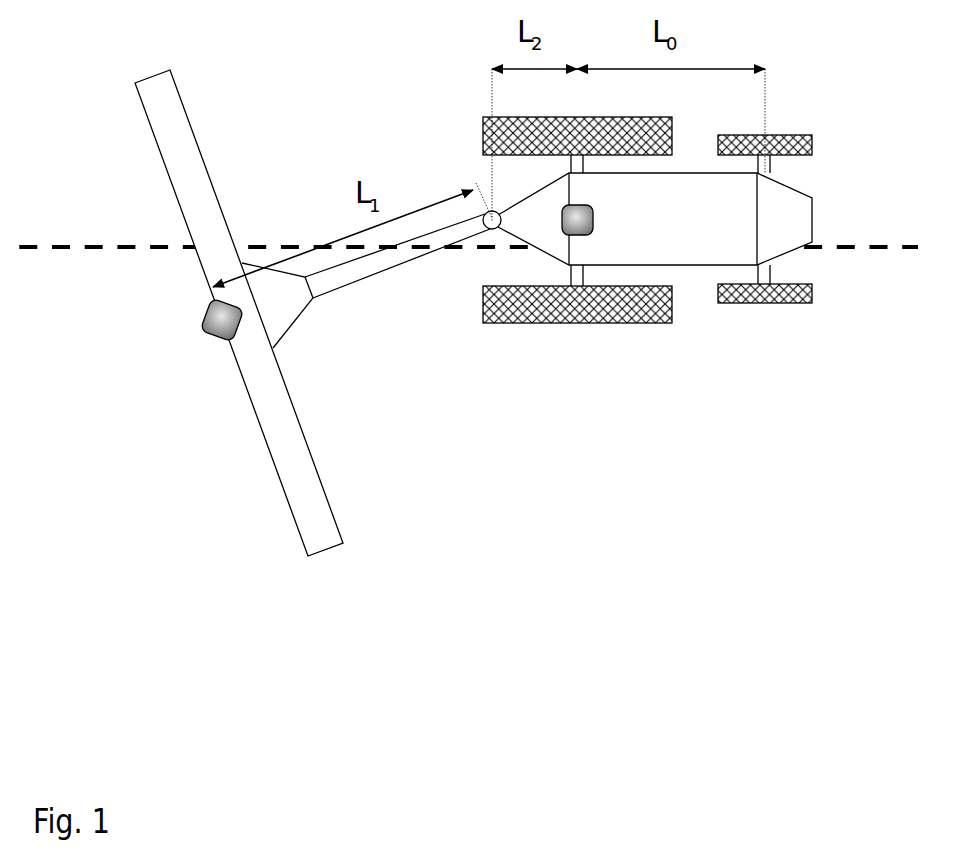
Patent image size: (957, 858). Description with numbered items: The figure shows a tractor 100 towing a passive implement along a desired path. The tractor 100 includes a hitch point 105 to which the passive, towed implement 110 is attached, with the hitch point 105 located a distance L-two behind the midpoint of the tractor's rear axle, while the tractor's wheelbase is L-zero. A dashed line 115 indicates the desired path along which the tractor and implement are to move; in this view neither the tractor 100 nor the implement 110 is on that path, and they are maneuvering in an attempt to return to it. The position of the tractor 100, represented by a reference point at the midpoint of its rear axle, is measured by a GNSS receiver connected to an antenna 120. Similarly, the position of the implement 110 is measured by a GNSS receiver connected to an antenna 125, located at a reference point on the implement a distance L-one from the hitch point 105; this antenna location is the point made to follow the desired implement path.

The tractor 100 is at (709, 210).
The hitch point 105 is at (491, 233).
The passive, towed implement 110 is at (270, 413).
The dashed line 115 is at (62, 257).
The antenna 120 is at (592, 231).
The antenna 125 is at (215, 330).